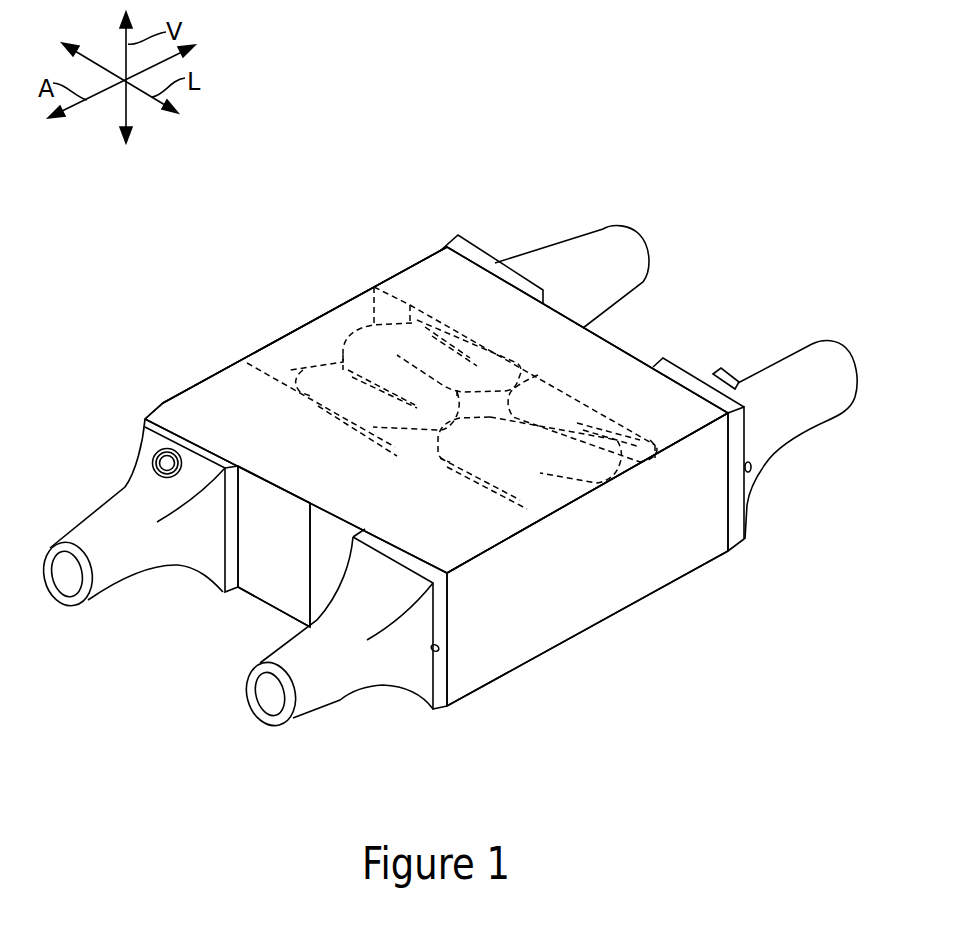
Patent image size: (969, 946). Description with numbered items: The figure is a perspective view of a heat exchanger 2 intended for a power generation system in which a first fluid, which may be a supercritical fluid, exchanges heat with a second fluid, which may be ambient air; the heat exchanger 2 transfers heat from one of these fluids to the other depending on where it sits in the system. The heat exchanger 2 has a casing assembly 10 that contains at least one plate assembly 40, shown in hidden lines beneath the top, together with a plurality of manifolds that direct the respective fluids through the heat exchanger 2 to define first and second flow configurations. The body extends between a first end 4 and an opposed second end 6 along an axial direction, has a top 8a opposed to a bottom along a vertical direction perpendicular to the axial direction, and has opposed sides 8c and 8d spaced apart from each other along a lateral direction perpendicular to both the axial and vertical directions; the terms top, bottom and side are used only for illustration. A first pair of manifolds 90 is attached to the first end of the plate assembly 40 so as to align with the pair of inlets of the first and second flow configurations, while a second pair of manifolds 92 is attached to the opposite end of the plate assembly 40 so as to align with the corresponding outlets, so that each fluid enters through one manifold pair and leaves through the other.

The heat exchanger 2 is at (255, 241).
The first end 4 is at (283, 580).
The second end 6 is at (652, 333).
The top 8a is at (323, 452).
The side 8c is at (217, 367).
The side 8d is at (528, 647).
The casing assembly 10 is at (210, 417).
The plate assembly 40 is at (568, 470).
The first pair of manifolds 90 is at (63, 612).
The second pair of manifolds 92 is at (846, 345).